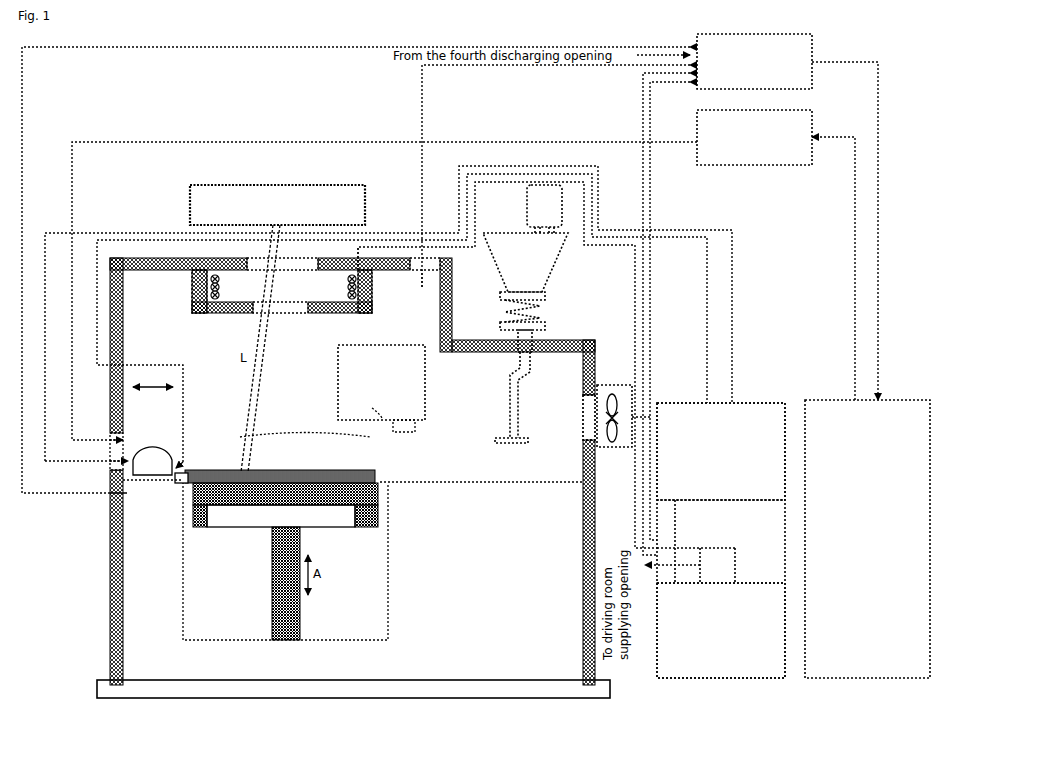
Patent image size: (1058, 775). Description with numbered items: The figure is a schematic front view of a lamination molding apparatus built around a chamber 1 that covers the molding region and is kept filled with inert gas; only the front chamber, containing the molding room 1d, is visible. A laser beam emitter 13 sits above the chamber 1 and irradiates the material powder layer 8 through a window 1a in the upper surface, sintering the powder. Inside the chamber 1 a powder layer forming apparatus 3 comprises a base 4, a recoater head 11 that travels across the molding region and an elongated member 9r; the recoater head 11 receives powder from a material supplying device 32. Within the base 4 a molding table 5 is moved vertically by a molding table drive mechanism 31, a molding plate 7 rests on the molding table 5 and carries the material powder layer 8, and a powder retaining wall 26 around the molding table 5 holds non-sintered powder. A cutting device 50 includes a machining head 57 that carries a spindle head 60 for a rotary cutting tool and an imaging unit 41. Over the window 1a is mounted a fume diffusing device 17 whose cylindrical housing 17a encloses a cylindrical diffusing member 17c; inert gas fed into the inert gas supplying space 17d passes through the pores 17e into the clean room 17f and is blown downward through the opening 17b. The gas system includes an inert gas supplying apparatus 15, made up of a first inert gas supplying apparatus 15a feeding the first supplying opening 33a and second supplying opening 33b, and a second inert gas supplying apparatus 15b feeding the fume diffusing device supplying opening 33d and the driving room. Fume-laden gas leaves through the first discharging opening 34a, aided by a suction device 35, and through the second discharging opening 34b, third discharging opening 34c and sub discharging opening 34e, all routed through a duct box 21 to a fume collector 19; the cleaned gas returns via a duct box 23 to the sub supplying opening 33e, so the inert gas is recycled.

The chamber 1 is at (118, 258).
The window 1a is at (255, 260).
The molding room 1d is at (290, 385).
The powder layer forming apparatus 3 is at (440, 445).
The base 4 is at (176, 488).
The molding table 5 is at (378, 515).
The molding plate 7 is at (281, 516).
The material powder layer 8 is at (380, 478).
The elongated member 9r is at (350, 471).
The recoater head 11 is at (153, 444).
The laser beam emitter 13 is at (305, 184).
The inert gas supplying apparatus 15 is at (735, 690).
The first inert gas supplying apparatus 15a is at (765, 410).
The second inert gas supplying apparatus 15b is at (765, 678).
The fume diffusing device 17 is at (392, 325).
The cylindrical housing 17a is at (373, 285).
The opening 17b is at (294, 318).
The cylindrical diffusing member 17c is at (345, 292).
The inert gas supplying space 17d is at (337, 313).
The pores 17e is at (192, 294).
The clean room 17f is at (243, 287).
The fume collector 19 is at (905, 678).
The duct box 21 is at (766, 38).
The duct box 23 is at (766, 114).
The powder retaining wall 26 is at (182, 597).
The molding table drive mechanism 31 is at (302, 642).
The material supplying device 32 is at (548, 262).
The first supplying opening 33a is at (183, 460).
The second supplying opening 33b is at (116, 476).
The fume diffusing device supplying opening 33d is at (355, 262).
The sub supplying opening 33e is at (118, 437).
The first discharging opening 34a is at (588, 428).
The second discharging opening 34b is at (125, 457).
The third discharging opening 34c is at (328, 471).
The sub discharging opening 34e is at (418, 288).
The suction device 35 is at (604, 447).
The imaging unit 41 is at (416, 426).
The cutting device 50 is at (440, 385).
The machining head 57 is at (425, 372).
The spindle head 60 is at (372, 404).